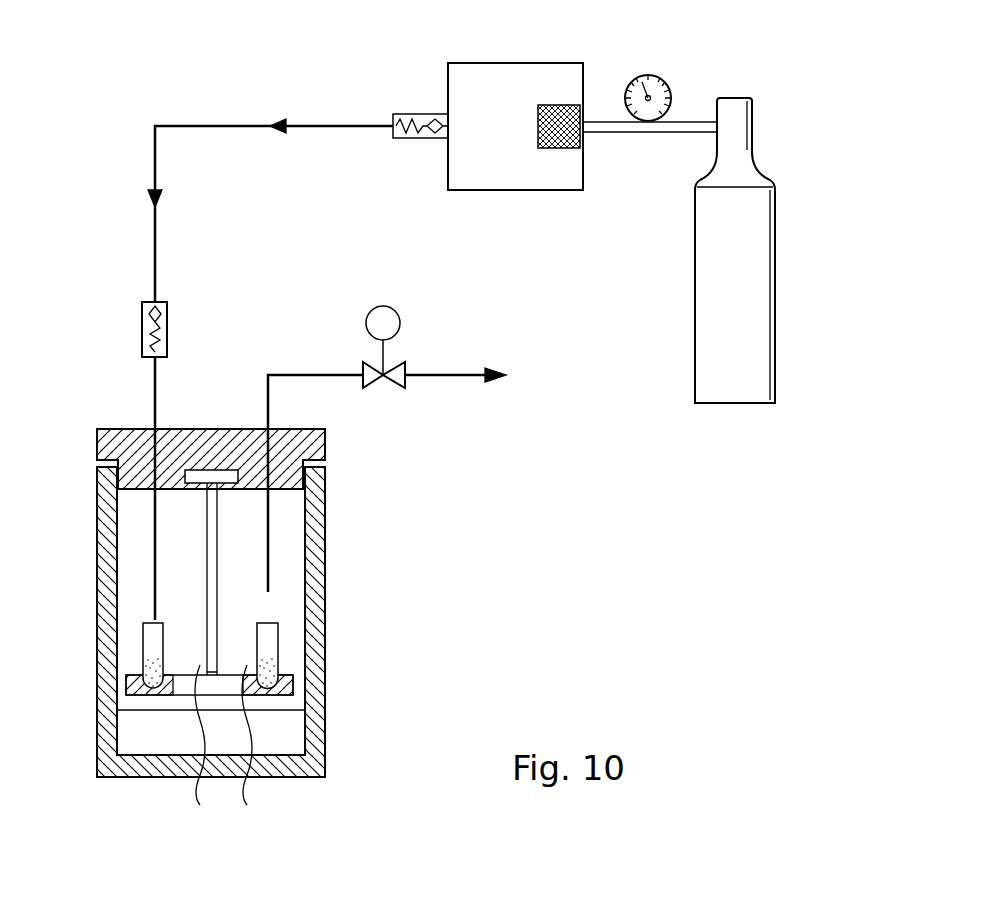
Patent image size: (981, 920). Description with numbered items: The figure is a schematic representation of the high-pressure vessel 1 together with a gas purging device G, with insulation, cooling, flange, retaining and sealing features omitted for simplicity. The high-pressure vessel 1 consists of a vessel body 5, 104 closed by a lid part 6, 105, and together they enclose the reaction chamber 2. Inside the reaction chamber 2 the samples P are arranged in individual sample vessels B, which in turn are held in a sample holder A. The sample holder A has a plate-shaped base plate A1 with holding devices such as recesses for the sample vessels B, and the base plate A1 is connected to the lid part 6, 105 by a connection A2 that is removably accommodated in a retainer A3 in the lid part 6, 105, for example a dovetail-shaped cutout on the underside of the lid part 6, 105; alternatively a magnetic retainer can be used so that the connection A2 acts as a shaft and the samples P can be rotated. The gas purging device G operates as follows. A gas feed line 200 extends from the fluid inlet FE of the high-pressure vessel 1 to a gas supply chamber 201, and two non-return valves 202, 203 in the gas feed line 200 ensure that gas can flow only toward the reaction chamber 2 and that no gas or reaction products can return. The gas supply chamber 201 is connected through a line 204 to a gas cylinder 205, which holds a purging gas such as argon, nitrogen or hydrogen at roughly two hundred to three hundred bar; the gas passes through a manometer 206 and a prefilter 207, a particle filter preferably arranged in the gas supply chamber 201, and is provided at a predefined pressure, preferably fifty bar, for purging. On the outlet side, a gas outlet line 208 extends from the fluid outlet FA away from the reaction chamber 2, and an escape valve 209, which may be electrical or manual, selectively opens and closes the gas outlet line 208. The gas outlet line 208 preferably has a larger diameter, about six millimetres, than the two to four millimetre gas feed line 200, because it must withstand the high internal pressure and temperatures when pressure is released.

The high-pressure vessel 1 is at (237, 594).
The reaction chamber 2 is at (240, 590).
The vessel body 5 is at (175, 622).
The vessel body 104 is at (105, 535).
The lid part 6 is at (175, 462).
The lid part 105 is at (104, 440).
The gas feed line 200 is at (155, 248).
The gas supply chamber 201 is at (523, 190).
The non-return valve 202 is at (412, 138).
The non-return valve 203 is at (142, 330).
The line 204 is at (688, 127).
The gas cylinder 205 is at (760, 292).
The manometer 206 is at (648, 75).
The prefilter 207 is at (555, 105).
The gas outlet line 208 is at (314, 375).
The escape valve 209 is at (407, 347).
The gas purging device G is at (114, 191).
The fluid inlet FE is at (155, 420).
The fluid outlet FA is at (268, 418).
The sample holder A is at (246, 612).
The base plate A1 is at (295, 683).
The connection A2 is at (207, 597).
The retainer A3 is at (210, 470).
The sample vessel B is at (143, 630).
The sample P is at (142, 668).